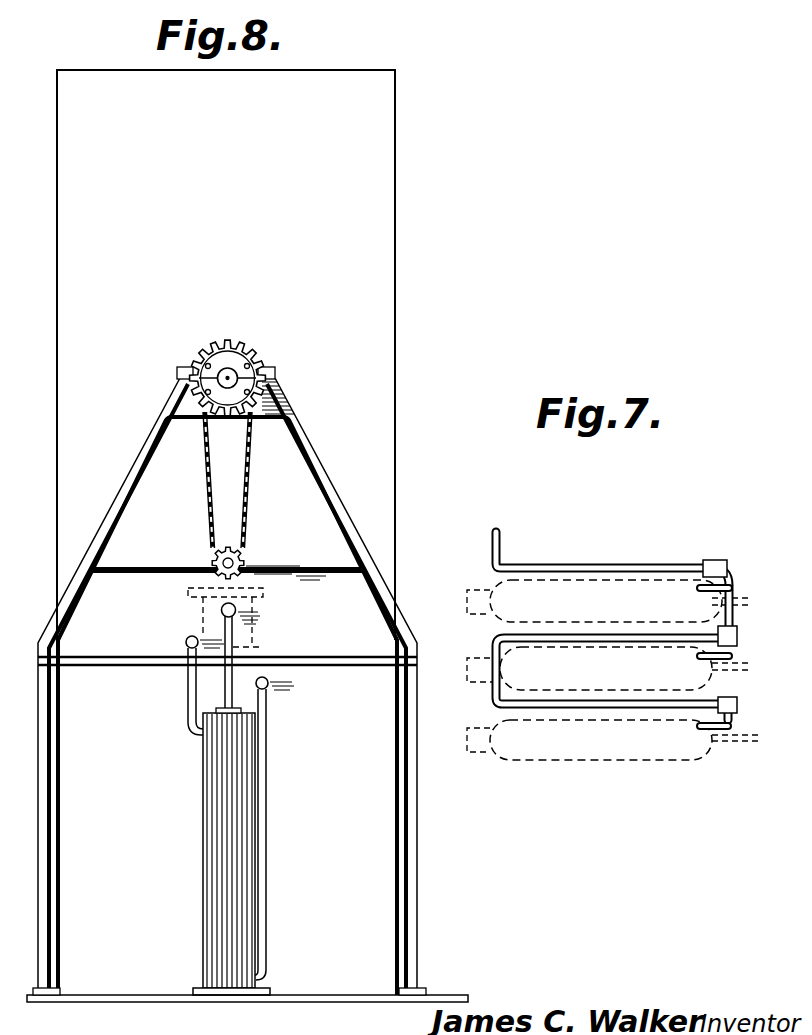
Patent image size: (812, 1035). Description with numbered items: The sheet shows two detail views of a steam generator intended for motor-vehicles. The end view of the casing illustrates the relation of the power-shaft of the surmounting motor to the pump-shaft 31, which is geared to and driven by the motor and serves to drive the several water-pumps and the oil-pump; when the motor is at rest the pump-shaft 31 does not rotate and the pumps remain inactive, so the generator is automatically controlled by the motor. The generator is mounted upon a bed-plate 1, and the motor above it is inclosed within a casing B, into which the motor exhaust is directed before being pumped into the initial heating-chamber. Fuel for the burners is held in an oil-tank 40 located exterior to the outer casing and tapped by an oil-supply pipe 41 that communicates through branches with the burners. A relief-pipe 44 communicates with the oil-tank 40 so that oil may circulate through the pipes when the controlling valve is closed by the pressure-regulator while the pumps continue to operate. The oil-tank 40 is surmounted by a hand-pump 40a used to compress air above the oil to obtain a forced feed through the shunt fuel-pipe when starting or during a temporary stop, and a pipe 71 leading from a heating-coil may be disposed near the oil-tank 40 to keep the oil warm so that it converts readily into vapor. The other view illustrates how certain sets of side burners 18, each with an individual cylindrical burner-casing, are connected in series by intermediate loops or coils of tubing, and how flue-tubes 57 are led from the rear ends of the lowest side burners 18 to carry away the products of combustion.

In FIG. 8, the casing B is at (226, 355).
In FIG. 8, the bed-plate 1 is at (121, 996).
In FIG. 8, the pump-shaft 31 is at (245, 558).
In FIG. 8, the oil-tank 40 is at (203, 835).
In FIG. 8, the hand-pump 40a is at (262, 605).
In FIG. 8, the oil-supply pipe 41 is at (234, 641).
In FIG. 8, the relief-pipe 44 is at (189, 683).
In FIG. 8, the pipe 71 is at (266, 836).
In FIG. 7, the side burners 18 is at (563, 773).
In FIG. 7, the flue-tubes 57 is at (622, 563).